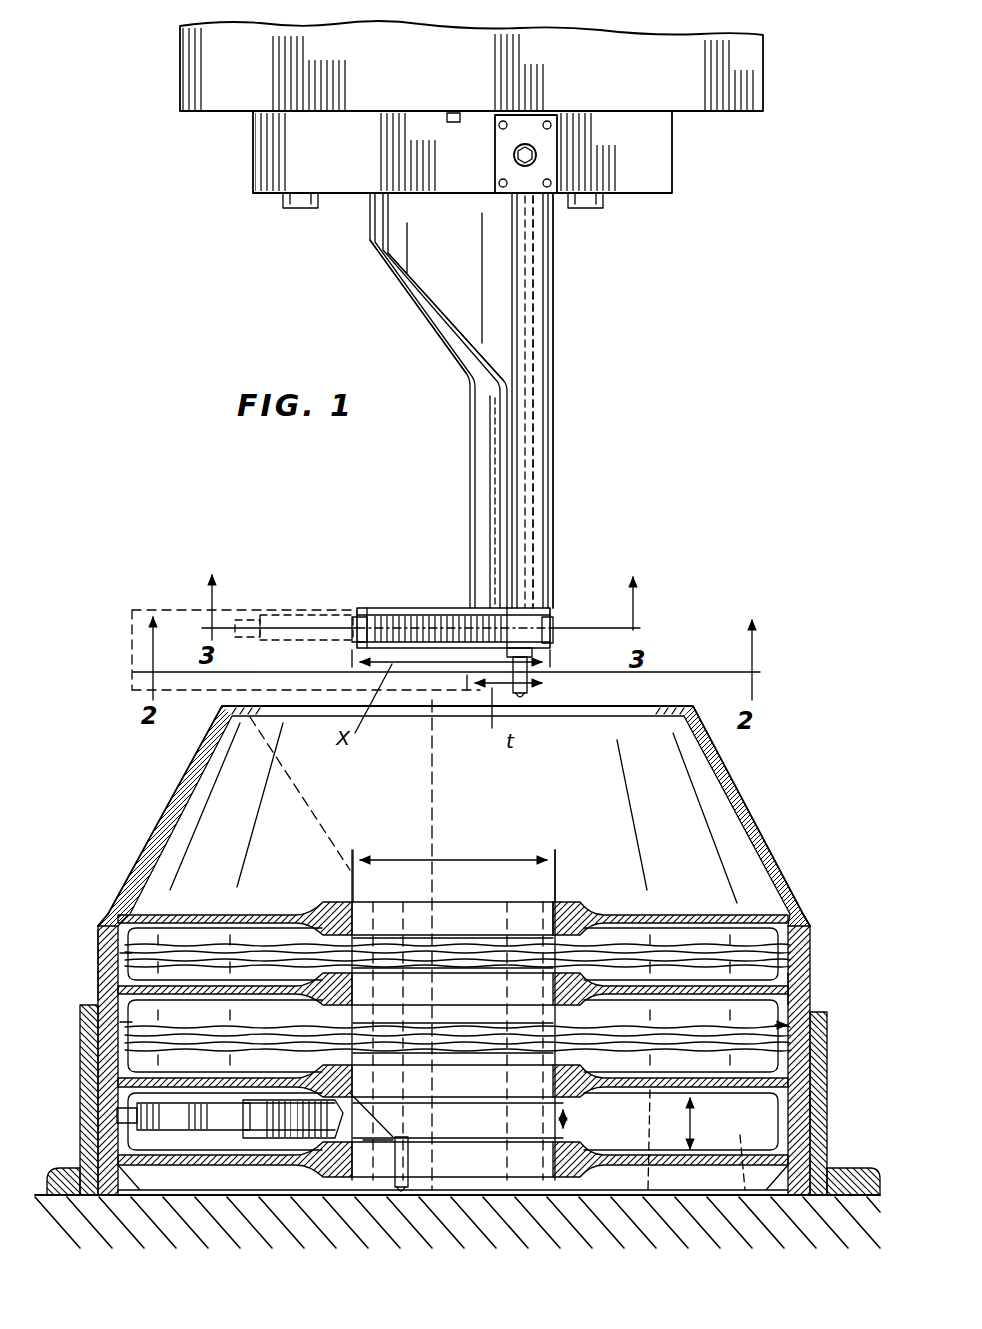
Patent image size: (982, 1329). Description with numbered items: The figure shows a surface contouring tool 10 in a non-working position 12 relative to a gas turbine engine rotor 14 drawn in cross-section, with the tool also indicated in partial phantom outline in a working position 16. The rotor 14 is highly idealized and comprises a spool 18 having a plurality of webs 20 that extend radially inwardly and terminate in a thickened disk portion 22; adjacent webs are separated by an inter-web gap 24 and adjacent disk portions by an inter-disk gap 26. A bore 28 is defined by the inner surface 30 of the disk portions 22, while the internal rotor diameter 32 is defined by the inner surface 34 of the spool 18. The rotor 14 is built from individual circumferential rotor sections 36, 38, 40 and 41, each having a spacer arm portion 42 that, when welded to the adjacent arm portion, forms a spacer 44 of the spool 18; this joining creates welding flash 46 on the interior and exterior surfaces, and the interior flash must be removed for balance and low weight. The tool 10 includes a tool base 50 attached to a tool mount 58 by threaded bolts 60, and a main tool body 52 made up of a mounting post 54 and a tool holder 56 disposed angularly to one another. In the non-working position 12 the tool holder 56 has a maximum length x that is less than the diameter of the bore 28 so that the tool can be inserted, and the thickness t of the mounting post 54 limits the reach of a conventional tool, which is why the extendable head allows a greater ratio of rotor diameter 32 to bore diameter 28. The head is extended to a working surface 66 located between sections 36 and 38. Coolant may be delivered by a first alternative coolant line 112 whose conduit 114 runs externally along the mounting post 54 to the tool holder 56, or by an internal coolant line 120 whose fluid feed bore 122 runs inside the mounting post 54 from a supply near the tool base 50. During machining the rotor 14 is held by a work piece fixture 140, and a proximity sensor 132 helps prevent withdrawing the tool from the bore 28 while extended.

The contouring tool 10 is at (417, 310).
The non-working position 12 is at (573, 450).
The gas turbine engine rotor 14 is at (170, 800).
The working position 16 is at (177, 605).
The spool 18 is at (810, 997).
The webs 20 is at (277, 990).
The thickened disk portion 22 is at (330, 916).
The inter-web gap 24 is at (690, 1122).
The inter-disk gap 26 is at (563, 1120).
The bore 28 is at (465, 857).
The inner surface of the disk portions 30 is at (538, 925).
The internal rotor diameter 32 is at (497, 1023).
The inner surface of the spool 34 is at (787, 980).
The rotor section 36 is at (827, 1157).
The rotor section 38 is at (810, 1070).
The rotor section 40 is at (787, 960).
The rotor section 41 is at (803, 917).
The spacer arm portion 42 is at (117, 907).
The spacer 44 is at (95, 987).
The welding flash 46 is at (97, 1022).
The tool base 50 is at (253, 157).
The main tool body 52 is at (553, 515).
The mounting post 54 is at (468, 495).
The tool holder 56 is at (450, 600).
The tool mount 58 is at (180, 72).
The threaded bolts 60 is at (299, 209).
The working surface 66 is at (105, 1083).
The first alternative coolant line 112 is at (473, 347).
The coolant conduit 114 is at (493, 317).
The coolant line 120 is at (557, 347).
The fluid feed bore 122 is at (530, 390).
The proximity sensor 132 is at (530, 690).
The work piece fixture 140 is at (87, 1060).